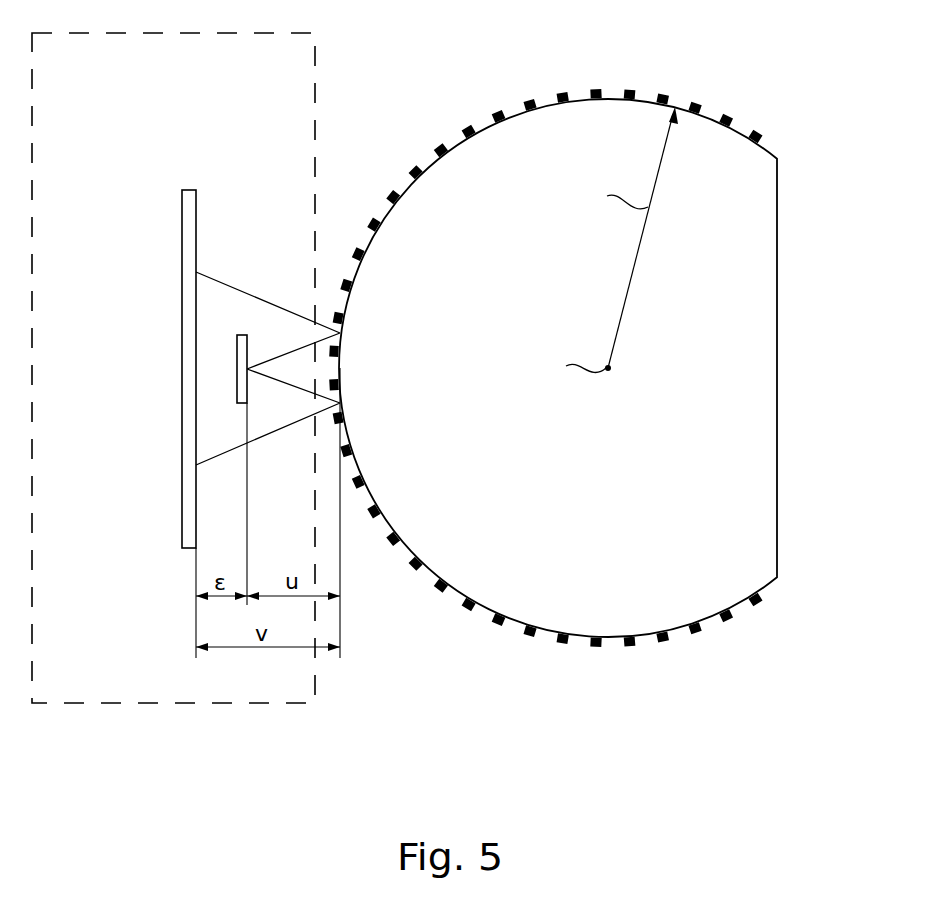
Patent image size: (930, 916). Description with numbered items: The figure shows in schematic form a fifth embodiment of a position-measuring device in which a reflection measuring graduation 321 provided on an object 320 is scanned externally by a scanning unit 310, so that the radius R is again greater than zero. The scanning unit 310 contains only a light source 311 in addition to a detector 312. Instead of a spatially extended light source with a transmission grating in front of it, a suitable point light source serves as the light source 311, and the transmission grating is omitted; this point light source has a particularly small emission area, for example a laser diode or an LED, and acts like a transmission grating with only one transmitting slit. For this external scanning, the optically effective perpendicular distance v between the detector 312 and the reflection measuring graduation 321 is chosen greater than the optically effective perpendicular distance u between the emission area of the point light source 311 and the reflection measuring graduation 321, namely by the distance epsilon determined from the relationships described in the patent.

The scanning unit 310 is at (145, 704).
The light source 311 is at (242, 334).
The detector 312 is at (190, 190).
The object 320 is at (773, 194).
The reflection measuring graduation 321 is at (582, 99).